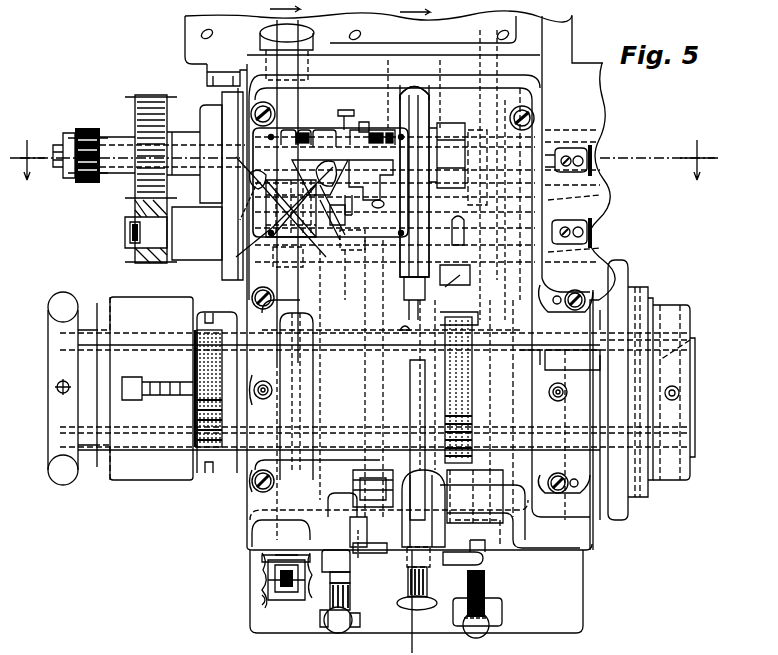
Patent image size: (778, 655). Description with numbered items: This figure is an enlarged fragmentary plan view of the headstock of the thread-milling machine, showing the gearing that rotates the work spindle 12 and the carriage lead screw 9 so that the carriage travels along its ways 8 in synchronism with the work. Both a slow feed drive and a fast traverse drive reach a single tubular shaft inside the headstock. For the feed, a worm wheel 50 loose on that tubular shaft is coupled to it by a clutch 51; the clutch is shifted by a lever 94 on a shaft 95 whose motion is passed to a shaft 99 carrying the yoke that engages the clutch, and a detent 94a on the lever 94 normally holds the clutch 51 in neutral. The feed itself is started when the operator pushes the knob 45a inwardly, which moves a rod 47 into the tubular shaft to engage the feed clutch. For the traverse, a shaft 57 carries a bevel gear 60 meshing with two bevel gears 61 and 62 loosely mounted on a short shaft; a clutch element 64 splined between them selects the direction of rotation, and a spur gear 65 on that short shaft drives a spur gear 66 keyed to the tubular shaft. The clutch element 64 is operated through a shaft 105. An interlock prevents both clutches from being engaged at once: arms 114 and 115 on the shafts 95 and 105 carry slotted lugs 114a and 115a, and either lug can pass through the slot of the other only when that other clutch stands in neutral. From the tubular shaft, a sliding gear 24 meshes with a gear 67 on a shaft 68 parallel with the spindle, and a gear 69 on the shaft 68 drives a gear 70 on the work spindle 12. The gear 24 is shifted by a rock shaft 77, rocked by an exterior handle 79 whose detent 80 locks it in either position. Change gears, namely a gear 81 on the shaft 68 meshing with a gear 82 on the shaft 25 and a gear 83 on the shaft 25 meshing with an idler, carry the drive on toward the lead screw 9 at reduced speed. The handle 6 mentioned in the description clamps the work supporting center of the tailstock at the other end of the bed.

The handle 6 is at (362, 150).
The ways 8 is at (295, 290).
The lead screw 9 is at (340, 12).
The work spindle 12 is at (697, 380).
The sliding gear 24 is at (455, 124).
The shaft 25 is at (602, 155).
The knob 45a is at (412, 604).
The rod 47 is at (412, 357).
The worm wheel 50 is at (429, 110).
The clutch 51 is at (370, 126).
The shaft 57 is at (305, 36).
The bevel gear 60 is at (303, 165).
The bevel gear 61 is at (240, 223).
The bevel gear 62 is at (345, 237).
The clutch element 64 is at (290, 262).
The spur gear 65 is at (325, 250).
The spur gear 66 is at (346, 110).
The gear 67 is at (447, 280).
The shaft 68 is at (604, 232).
The gear 69 is at (480, 208).
The gear 70 is at (515, 518).
The rock shaft 77 is at (430, 383).
The handle 79 is at (485, 585).
The detent 80 is at (490, 555).
The gear 81 is at (143, 265).
The gear 82 is at (143, 95).
The gear 83 is at (95, 128).
The lever 94 is at (338, 633).
The detent 94a is at (350, 592).
The shaft 95 is at (345, 578).
The shaft 99 is at (368, 312).
The shaft 105 is at (292, 478).
The arm 114 is at (302, 598).
The lug 114a is at (262, 568).
The arm 115 is at (275, 596).
The lug 115a is at (272, 578).